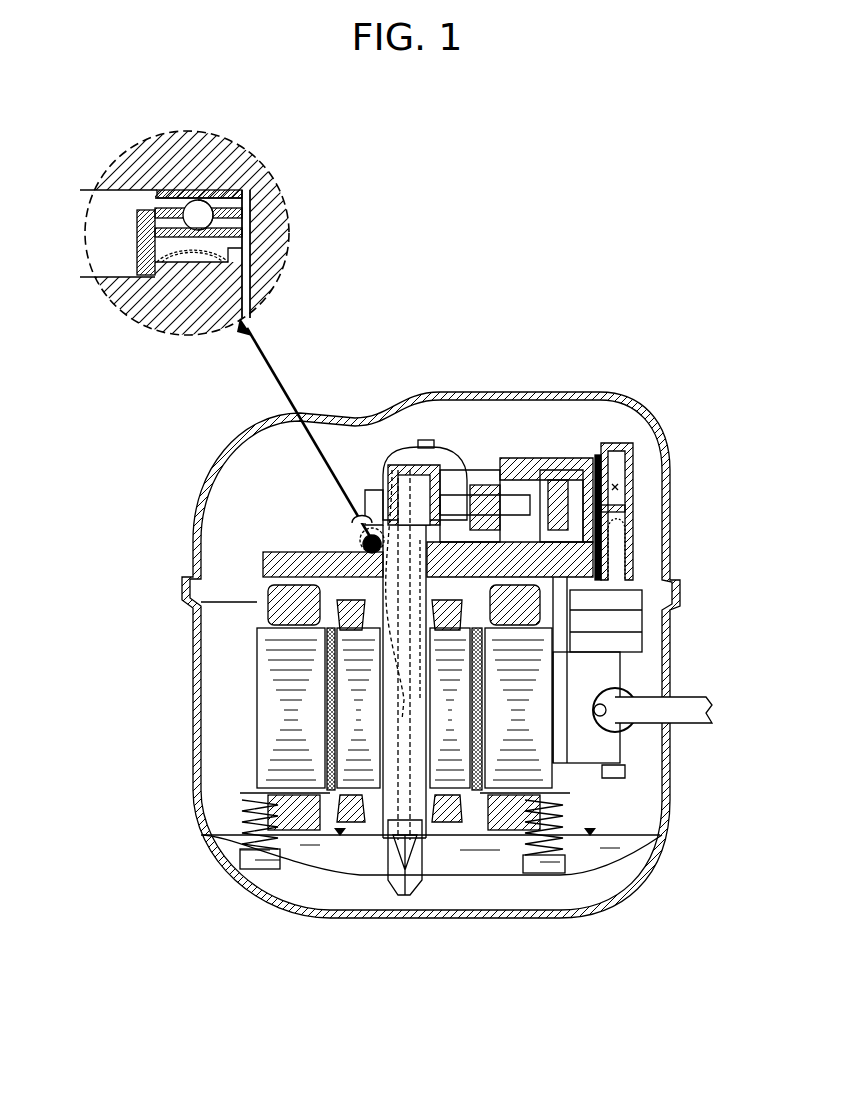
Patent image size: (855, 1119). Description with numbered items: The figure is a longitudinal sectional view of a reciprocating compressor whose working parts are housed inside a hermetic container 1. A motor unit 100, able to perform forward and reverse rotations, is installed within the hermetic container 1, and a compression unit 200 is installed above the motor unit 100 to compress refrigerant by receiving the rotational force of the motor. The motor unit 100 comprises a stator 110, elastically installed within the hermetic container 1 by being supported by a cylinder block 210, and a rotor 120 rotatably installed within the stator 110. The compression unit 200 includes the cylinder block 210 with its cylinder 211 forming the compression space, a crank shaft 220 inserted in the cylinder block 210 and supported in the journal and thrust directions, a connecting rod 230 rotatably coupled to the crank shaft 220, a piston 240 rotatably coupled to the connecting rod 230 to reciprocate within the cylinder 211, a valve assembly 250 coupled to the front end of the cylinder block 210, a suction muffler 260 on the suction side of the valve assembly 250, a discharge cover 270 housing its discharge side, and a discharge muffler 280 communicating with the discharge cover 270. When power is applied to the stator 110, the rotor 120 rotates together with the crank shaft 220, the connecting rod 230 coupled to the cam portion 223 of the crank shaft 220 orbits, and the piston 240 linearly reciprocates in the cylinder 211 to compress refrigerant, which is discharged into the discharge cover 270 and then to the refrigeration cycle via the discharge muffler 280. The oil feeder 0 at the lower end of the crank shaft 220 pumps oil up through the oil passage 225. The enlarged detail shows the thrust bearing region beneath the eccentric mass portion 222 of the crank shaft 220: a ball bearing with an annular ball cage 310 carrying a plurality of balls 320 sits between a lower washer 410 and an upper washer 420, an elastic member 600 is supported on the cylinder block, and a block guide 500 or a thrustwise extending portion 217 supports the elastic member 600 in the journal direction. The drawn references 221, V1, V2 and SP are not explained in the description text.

The hermetic container 1 is at (224, 456).
The motor unit 100 is at (329, 707).
The stator 110 is at (265, 708).
The rotor 120 is at (345, 735).
The compression unit 200 is at (370, 468).
The cylinder block 210 is at (262, 565).
The cylinder 211 is at (495, 482).
The thrustwise extending portion 217 is at (232, 253).
The crank shaft 220 is at (380, 778).
The shaft portion 221 is at (392, 805).
The eccentric mass portion 222 is at (352, 523).
The cam portion 223 is at (395, 470).
The oil passage 225 is at (425, 820).
The connecting rod 230 is at (475, 500).
The piston 240 is at (560, 470).
The valve assembly 250 is at (596, 470).
The suction muffler 260 is at (636, 622).
The discharge cover 270 is at (617, 455).
The discharge muffler 280 is at (405, 458).
The ball cage 310 is at (252, 217).
The balls 320 is at (208, 209).
The lower washer 410 is at (237, 235).
The upper washer 420 is at (208, 190).
The block guide 500 is at (137, 232).
The elastic member 600 is at (137, 247).
The oil feeder 0 is at (380, 863).
The first volume V1 is at (603, 478).
The second volume V2 is at (618, 487).
The suction pipe SP is at (676, 702).